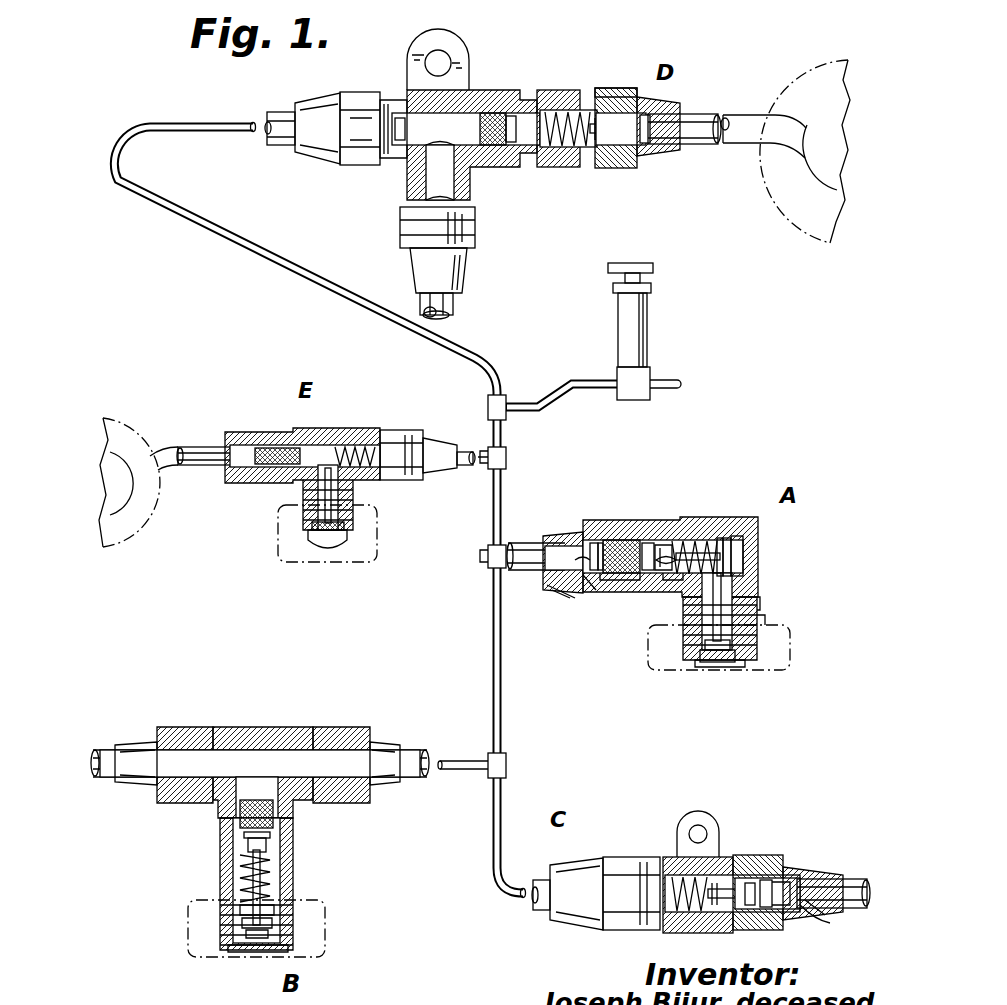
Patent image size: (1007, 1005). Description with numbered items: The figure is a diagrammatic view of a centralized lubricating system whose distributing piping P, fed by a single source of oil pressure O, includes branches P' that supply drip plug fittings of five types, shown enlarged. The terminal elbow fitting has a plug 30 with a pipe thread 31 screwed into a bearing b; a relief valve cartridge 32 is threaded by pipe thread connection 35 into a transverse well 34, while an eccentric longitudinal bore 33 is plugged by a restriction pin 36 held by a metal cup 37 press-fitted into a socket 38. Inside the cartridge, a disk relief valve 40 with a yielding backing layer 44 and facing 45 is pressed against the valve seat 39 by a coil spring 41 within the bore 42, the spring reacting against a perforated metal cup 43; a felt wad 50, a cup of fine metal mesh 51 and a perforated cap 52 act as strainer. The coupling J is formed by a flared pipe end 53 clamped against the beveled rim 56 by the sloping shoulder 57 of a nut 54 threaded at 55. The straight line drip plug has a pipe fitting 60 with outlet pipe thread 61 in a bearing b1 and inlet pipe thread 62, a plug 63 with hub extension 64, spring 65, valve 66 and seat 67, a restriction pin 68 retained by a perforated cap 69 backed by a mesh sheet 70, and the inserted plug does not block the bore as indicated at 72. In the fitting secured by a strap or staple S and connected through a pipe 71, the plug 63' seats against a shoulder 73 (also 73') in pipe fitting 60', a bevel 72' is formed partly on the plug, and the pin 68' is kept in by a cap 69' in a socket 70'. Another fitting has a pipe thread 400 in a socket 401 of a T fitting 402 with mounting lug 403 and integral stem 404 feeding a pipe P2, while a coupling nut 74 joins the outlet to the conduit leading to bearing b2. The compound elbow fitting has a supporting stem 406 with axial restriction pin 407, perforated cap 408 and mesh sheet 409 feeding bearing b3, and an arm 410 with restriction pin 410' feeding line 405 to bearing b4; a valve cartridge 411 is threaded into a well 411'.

The distributing piping P is at (365, 510).
The source of oil pressure O is at (640, 313).
The mounting lug 403 is at (458, 46).
The pipe thread 400 is at (497, 170).
The socket 401 is at (482, 96).
The T fitting 402 is at (393, 168).
The integral stem 404 is at (420, 196).
The pipe P2 is at (457, 305).
The pipe fitting 60' is at (668, 494).
The shoulder 73 is at (637, 535).
The restriction wire or pin 68' is at (688, 478).
The plug 63' is at (697, 509).
The bevel 72' is at (659, 145).
The coupling nut 74 is at (656, 96).
The pipe 71 is at (738, 120).
The bearing b2 is at (800, 192).
The bearing b4 is at (150, 505).
The line 405 is at (190, 447).
The arm 410 is at (302, 467).
The restriction pin 410' is at (299, 434).
The well 411' is at (360, 436).
The valve cartridge 411 is at (427, 437).
The supporting stem 406 is at (355, 495).
The axial restriction pin 407 is at (315, 508).
The perforated cap 408 is at (338, 545).
The sheet of metal mesh 409 is at (328, 540).
The bearing b3 is at (377, 540).
The branch pipe P' is at (536, 536).
The perforated cap 52 is at (568, 547).
The felt wad 50 is at (630, 540).
The plug fitting 30 is at (705, 620).
The thread 55 is at (616, 540).
The flared pipe end 53 is at (592, 546).
The beveled rim 56 is at (600, 542).
The valve seat 39 is at (648, 542).
The relief valve cartridge 32 is at (664, 543).
The disk relief valve 40 is at (686, 540).
The coil spring 41 is at (697, 553).
The bore 42 is at (719, 538).
The pipe thread connection 35 is at (728, 540).
The transverse well 34 is at (745, 540).
The perforated metal cup 43 is at (722, 572).
The yielding backing layer 44 is at (668, 572).
The facing 45 is at (667, 582).
The cup of fine metal mesh 51 is at (620, 582).
The nut 54 is at (592, 578).
The sloping shoulder 57 is at (584, 565).
The coupling J is at (570, 598).
The longitudinal bore 33 is at (760, 600).
The restriction pin 36 is at (760, 618).
The metal cup 37 is at (740, 650).
The socket 38 is at (718, 660).
The pipe thread 31 is at (700, 660).
The bearing b is at (785, 650).
The drip plug insertion 72 is at (260, 740).
The pipe thread 62 is at (298, 803).
The pipe fitting 60 is at (231, 884).
The valve seat 67 is at (276, 840).
The valve 66 is at (245, 845).
The spring 65 is at (268, 860).
The hub extension 64 is at (240, 890).
The restriction wire or pin 68 is at (201, 893).
The plug 63 is at (299, 899).
The pipe thread 61 is at (282, 922).
The sheet of fine wire mesh 70 is at (304, 940).
The perforated cap 69 is at (254, 969).
The bearing b1 is at (325, 950).
The strap or staple S is at (704, 845).
The shoulder 73' is at (796, 869).
The socket 70' is at (769, 921).
The cap 69' is at (822, 914).